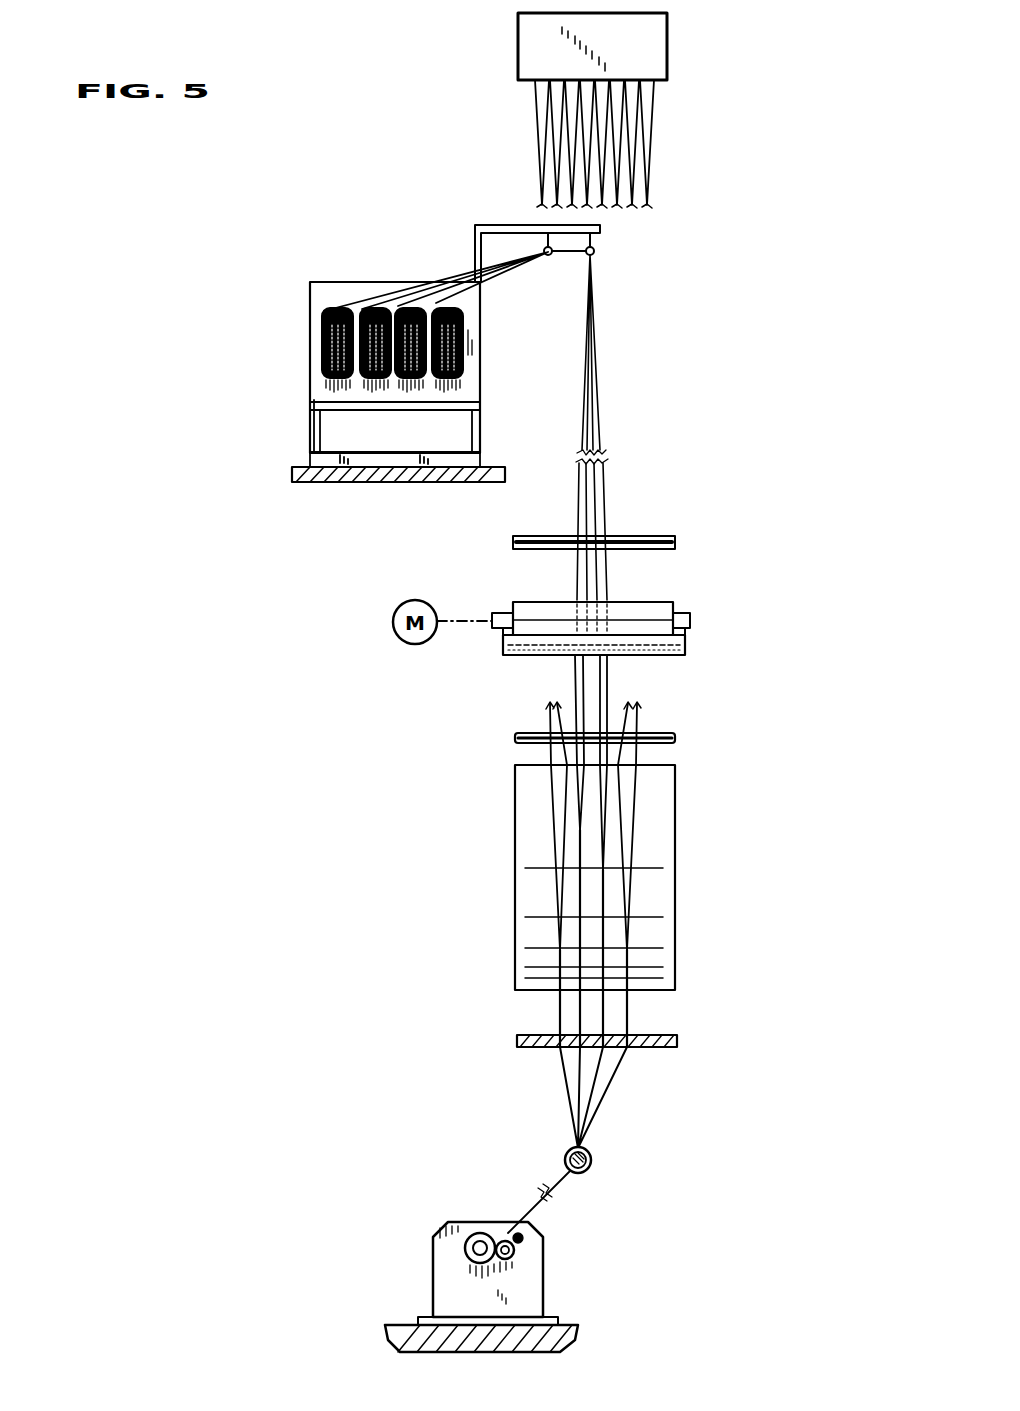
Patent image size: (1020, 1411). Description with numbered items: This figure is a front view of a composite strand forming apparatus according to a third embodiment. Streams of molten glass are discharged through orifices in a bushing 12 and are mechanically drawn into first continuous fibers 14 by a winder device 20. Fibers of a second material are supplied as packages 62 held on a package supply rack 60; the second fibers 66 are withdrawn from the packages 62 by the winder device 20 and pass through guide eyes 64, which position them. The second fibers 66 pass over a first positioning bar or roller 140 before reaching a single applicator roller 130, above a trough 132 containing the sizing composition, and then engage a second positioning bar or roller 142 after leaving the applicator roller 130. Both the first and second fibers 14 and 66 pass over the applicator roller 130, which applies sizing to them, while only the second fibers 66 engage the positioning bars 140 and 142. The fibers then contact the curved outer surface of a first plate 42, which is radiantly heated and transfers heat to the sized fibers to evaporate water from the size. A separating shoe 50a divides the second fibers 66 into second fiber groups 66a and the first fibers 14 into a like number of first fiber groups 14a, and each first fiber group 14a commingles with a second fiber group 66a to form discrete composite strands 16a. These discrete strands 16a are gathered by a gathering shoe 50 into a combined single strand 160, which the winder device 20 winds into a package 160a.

The bushing 12 is at (663, 42).
The first continuous fibers 14 is at (648, 112).
The guide eyes 64 is at (545, 249).
The package supply rack 60 is at (310, 328).
The packages 62 is at (437, 307).
The second fibers 66 is at (477, 278).
The second fiber groups 66a is at (600, 398).
The first positioning bar or roller 140 is at (645, 540).
The applicator roller 130 is at (652, 606).
The trough 132 is at (688, 647).
The first fiber groups 14a is at (692, 700).
The second positioning bar or roller 142 is at (670, 737).
The first plate 42 is at (666, 802).
The separating shoe 50a is at (670, 1038).
The discrete composite strands 16a is at (685, 1108).
The gathering shoe 50 is at (592, 1160).
The combined single strand 160 is at (562, 1196).
The package 160a is at (478, 1233).
The winder device 20 is at (418, 1237).